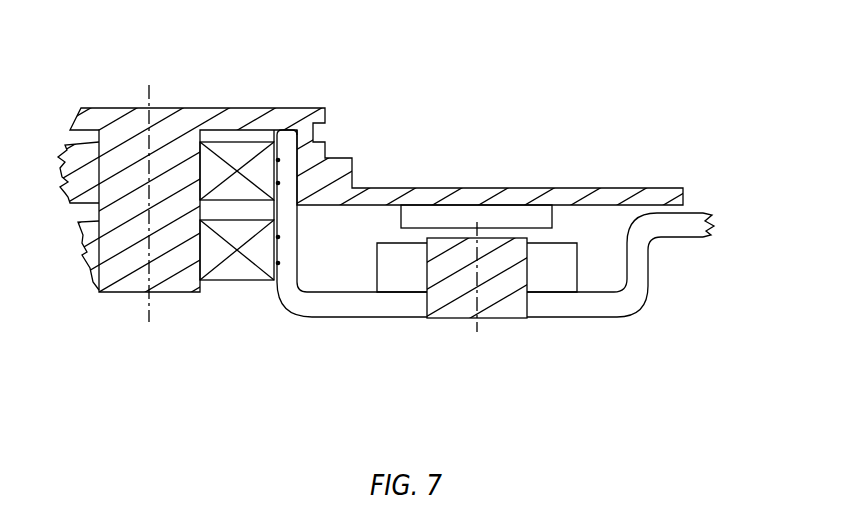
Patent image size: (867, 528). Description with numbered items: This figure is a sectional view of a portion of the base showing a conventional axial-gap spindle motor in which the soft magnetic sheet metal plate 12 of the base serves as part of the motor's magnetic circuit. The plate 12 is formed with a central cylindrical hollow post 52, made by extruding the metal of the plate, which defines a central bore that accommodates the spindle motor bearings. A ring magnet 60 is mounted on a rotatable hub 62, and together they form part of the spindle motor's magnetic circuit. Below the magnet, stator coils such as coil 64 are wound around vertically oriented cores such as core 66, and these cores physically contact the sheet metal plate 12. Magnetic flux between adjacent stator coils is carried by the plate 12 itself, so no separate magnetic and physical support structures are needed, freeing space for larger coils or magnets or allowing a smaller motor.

The sheet metal plate 12 is at (677, 230).
The central cylindrical hollow post 52 is at (283, 143).
The ring magnet 60 is at (520, 215).
The rotatable hub 62 is at (338, 177).
The stator coil 64 is at (543, 280).
The core 66 is at (448, 290).